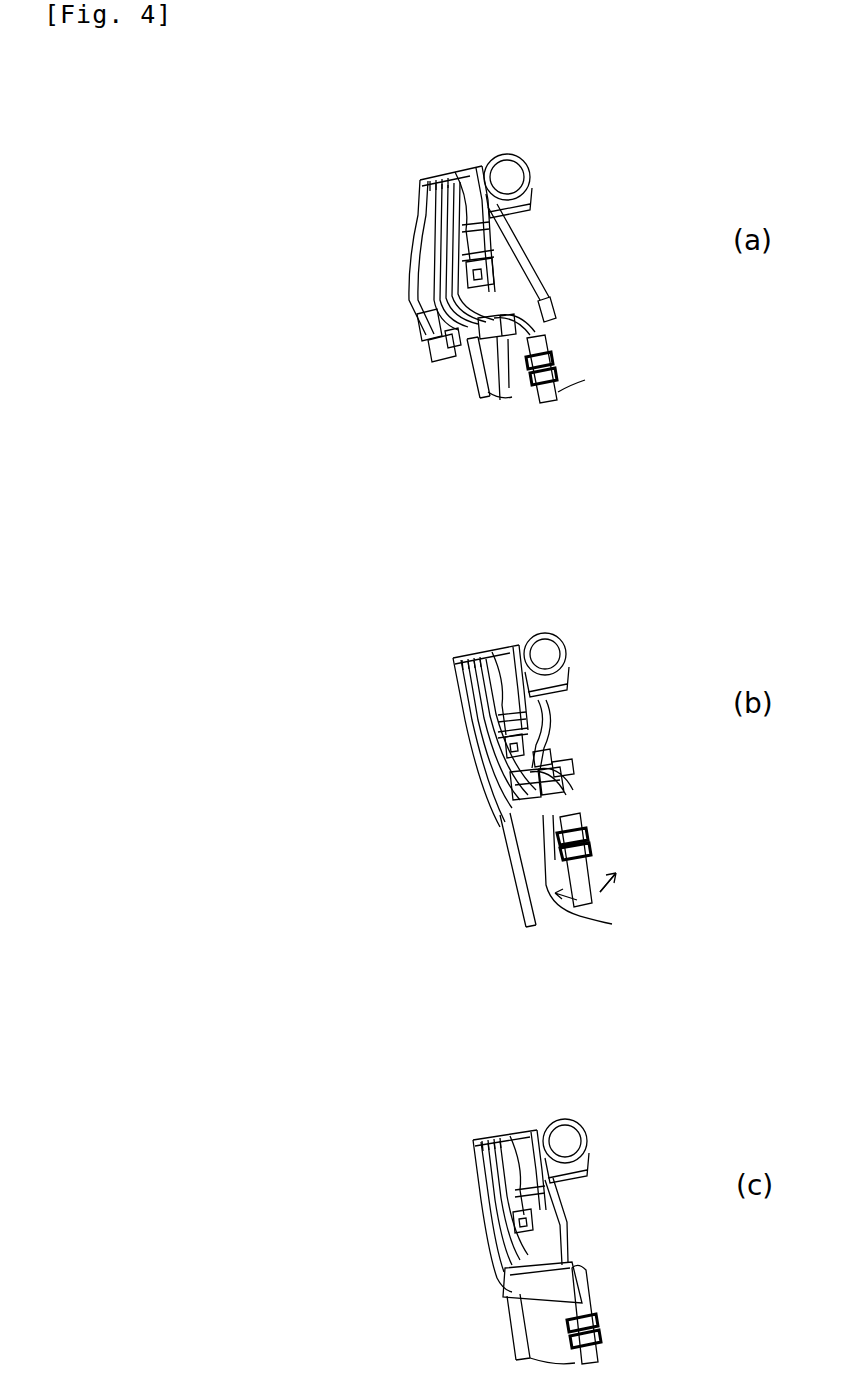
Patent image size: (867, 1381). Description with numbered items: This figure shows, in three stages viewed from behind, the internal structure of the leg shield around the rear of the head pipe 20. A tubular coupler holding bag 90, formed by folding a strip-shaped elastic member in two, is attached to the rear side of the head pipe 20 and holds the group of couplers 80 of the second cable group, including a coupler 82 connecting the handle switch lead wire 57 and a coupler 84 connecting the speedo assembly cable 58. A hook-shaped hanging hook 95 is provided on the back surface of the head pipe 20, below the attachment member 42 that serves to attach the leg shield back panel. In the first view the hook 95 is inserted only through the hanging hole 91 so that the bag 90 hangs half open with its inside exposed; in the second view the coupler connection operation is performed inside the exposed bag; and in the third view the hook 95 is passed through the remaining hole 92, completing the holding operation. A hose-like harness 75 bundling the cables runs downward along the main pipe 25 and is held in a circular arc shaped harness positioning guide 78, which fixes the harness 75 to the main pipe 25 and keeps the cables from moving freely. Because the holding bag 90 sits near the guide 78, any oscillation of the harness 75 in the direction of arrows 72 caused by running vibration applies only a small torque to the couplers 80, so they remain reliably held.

The head pipe 20 is at (427, 192).
The cable 58 is at (417, 205).
The lead wire 57 is at (418, 242).
The hanging hook 95 is at (416, 272).
The coupler holding bag 90 is at (555, 308).
The attachment member 42 is at (500, 265).
The hanging hole 91 is at (420, 318).
The coupler 82 is at (427, 349).
The coupler 84 is at (450, 365).
The group of couplers 80 is at (302, 400).
The main pipe 25 is at (473, 388).
The hole 92 is at (502, 395).
The harness 75 is at (545, 345).
The harness positioning guide 78 is at (556, 372).
The arrows 72 is at (620, 890).